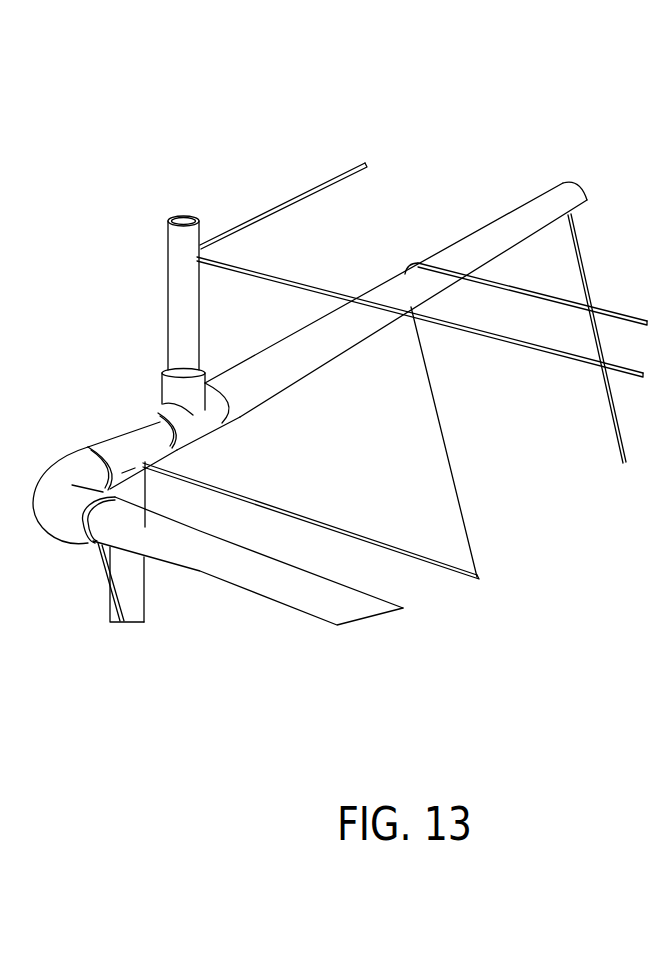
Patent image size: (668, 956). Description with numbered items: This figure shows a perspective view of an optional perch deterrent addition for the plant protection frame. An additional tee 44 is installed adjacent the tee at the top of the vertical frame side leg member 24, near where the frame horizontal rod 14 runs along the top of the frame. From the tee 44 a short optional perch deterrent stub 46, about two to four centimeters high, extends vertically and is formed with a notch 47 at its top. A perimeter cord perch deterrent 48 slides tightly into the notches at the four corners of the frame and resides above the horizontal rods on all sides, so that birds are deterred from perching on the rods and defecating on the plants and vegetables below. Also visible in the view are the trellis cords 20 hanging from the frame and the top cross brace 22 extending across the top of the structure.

The frame horizontal rod 14 is at (513, 213).
The trellis cords 20 is at (447, 472).
The top cross brace 22 is at (170, 547).
The frame side leg member 24 is at (137, 615).
The additional tee 44 is at (163, 407).
The optional perch deterrent stub 46 is at (175, 277).
The notch in stub 47 is at (195, 220).
The perimeter cord perch deterrent 48 is at (283, 202).